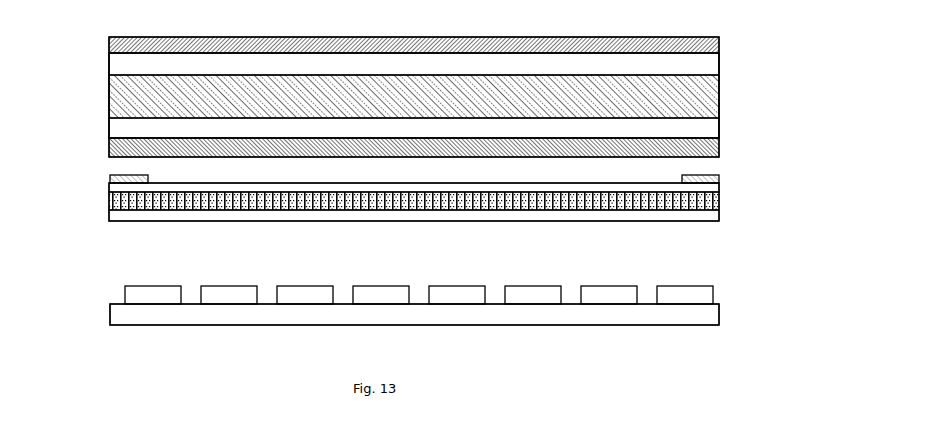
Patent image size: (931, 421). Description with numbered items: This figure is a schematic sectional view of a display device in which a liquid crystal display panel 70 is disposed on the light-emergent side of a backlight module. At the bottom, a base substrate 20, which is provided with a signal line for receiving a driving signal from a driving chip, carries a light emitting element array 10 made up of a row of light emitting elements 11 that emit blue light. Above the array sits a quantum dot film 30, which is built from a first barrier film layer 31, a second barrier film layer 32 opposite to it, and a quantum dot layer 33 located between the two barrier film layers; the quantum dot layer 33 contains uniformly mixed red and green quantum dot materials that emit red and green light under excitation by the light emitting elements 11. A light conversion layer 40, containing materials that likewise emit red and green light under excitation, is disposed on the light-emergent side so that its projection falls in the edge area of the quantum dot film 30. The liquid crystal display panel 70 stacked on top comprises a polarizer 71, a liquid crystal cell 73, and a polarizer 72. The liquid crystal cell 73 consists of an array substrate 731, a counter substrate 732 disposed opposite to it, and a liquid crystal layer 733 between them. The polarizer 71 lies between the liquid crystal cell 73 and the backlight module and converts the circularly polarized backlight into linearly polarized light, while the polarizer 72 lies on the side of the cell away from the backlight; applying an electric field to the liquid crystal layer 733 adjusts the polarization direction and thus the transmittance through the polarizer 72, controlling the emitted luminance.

The liquid crystal display panel 70 is at (722, 37).
The polarizer 72 is at (108, 42).
The liquid crystal cell 73 is at (50, 47).
The counter substrate 732 is at (108, 62).
The liquid crystal layer 733 is at (108, 96).
The array substrate 731 is at (108, 128).
The polarizer 71 is at (108, 148).
The light conversion layer 40 is at (108, 179).
The quantum dot film 30 is at (770, 180).
The second barrier film layer 32 is at (720, 188).
The quantum dot layer 33 is at (720, 203).
The first barrier film layer 31 is at (720, 214).
The base substrate 20 is at (112, 319).
The light emitting element array 10 is at (720, 297).
The light emitting elements 11 is at (707, 288).